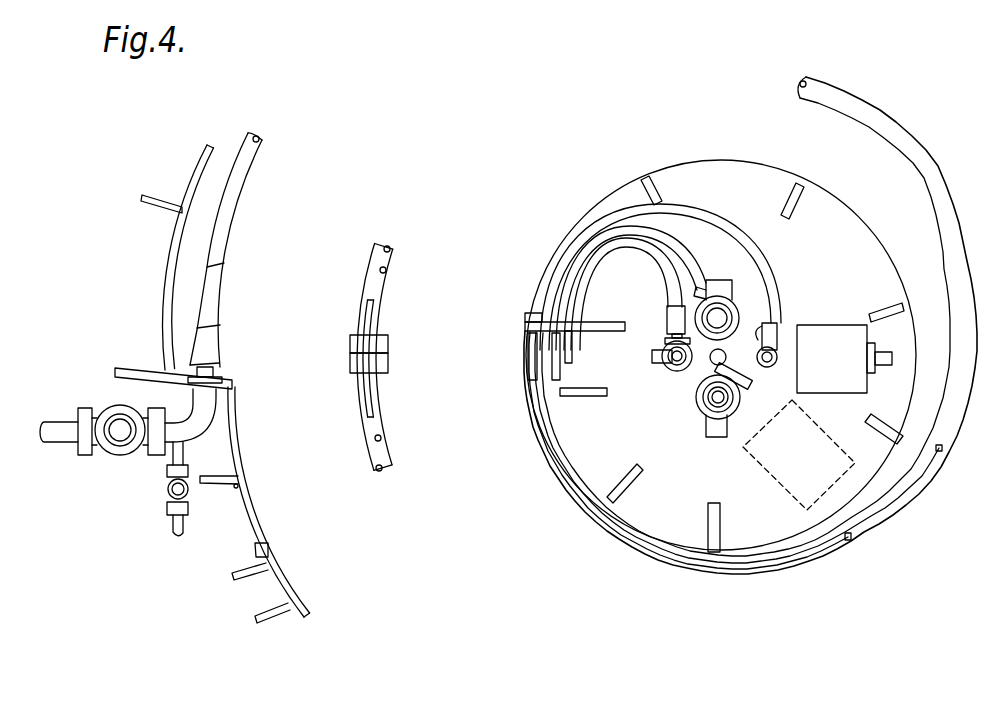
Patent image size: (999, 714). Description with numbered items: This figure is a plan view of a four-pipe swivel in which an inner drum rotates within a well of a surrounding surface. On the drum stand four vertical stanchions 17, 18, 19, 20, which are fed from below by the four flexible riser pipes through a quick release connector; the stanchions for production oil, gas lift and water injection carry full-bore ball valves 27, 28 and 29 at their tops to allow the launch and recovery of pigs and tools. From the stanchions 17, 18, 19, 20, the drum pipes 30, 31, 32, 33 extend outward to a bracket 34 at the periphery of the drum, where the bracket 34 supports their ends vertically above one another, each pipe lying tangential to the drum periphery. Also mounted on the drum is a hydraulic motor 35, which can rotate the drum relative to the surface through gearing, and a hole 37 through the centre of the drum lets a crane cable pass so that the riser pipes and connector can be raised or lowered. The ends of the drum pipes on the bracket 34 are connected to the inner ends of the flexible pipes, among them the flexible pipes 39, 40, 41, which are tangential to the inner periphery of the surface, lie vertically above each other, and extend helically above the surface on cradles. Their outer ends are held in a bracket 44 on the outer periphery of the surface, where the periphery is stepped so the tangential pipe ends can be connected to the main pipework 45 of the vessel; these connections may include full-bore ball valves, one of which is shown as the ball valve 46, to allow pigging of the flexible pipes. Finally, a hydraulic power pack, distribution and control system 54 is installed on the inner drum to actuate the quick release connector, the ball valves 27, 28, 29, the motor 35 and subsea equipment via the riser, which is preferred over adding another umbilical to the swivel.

The vertical stanchion 17 is at (699, 422).
The vertical stanchion 18 is at (665, 342).
The vertical stanchion 19 is at (781, 358).
The vertical stanchion 20 is at (712, 333).
The full-bore ball valve 27 is at (720, 405).
The full-bore ball valve 28 is at (652, 357).
The full-bore ball valve 29 is at (723, 312).
The drum pipe 30 is at (772, 323).
The drum pipe 31 is at (688, 255).
The drum pipe 32 is at (617, 213).
The drum pipe 33 is at (556, 262).
The bracket 34 is at (527, 322).
The hydraulic motor 35 is at (833, 327).
The hole 37 is at (724, 360).
The flexible pipe 39 is at (222, 242).
The flexible pipe 40 is at (377, 287).
The flexible pipe 41 is at (372, 320).
The bracket 44 is at (232, 380).
The main pipework 45 is at (180, 432).
The full-bore ball valve 46 is at (118, 425).
The hydraulic power pack, distribution and control system 54 is at (798, 473).